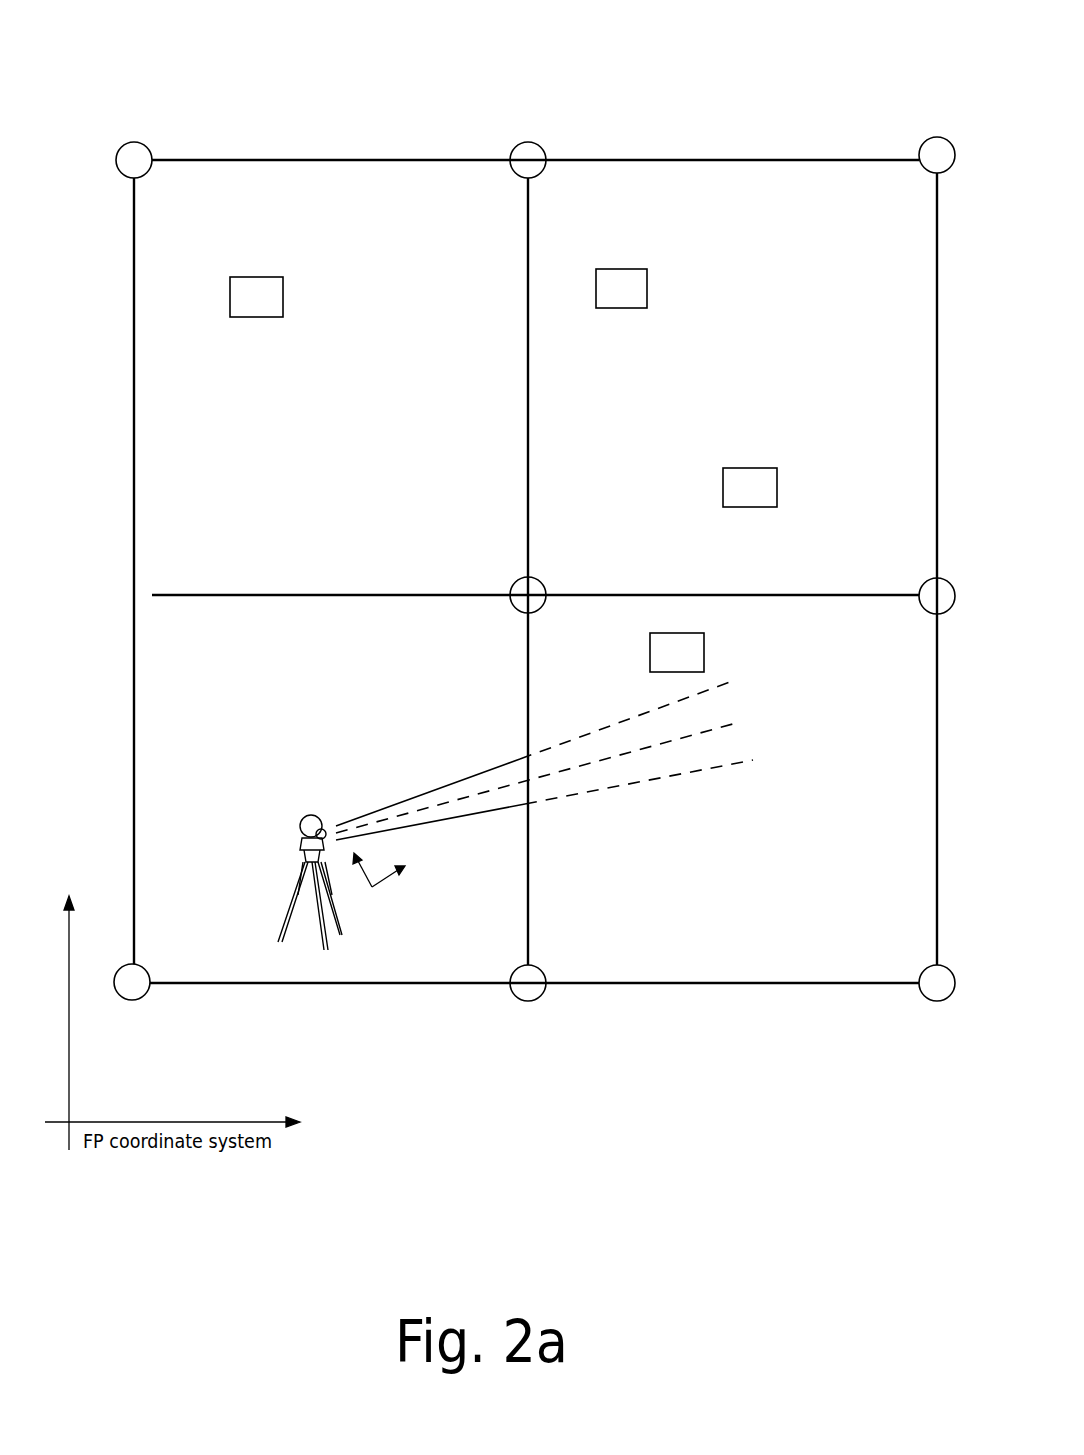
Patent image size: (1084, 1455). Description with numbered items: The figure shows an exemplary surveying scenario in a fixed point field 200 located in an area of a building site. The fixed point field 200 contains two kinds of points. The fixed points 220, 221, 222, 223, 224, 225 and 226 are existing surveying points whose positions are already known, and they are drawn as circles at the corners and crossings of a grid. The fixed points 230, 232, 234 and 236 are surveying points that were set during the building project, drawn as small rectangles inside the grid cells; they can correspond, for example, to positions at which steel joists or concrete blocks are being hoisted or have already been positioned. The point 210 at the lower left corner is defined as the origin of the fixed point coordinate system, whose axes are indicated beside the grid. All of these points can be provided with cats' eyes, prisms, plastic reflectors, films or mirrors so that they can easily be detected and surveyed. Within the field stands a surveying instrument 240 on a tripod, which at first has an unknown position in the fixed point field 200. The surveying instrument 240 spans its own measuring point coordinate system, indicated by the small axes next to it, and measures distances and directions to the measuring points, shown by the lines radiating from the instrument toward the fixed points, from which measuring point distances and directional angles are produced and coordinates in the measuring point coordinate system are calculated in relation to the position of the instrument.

The fixed point field 200 is at (622, 62).
The point 210 is at (138, 1000).
The fixed point 220 is at (128, 143).
The fixed point 221 is at (536, 143).
The fixed point 222 is at (923, 145).
The fixed point 223 is at (541, 583).
The fixed point 224 is at (926, 612).
The fixed point 225 is at (535, 1000).
The fixed point 226 is at (930, 1000).
The fixed point 230 is at (648, 290).
The fixed point 232 is at (778, 486).
The fixed point 234 is at (705, 651).
The fixed point 236 is at (284, 295).
The surveying instrument 240 is at (312, 812).